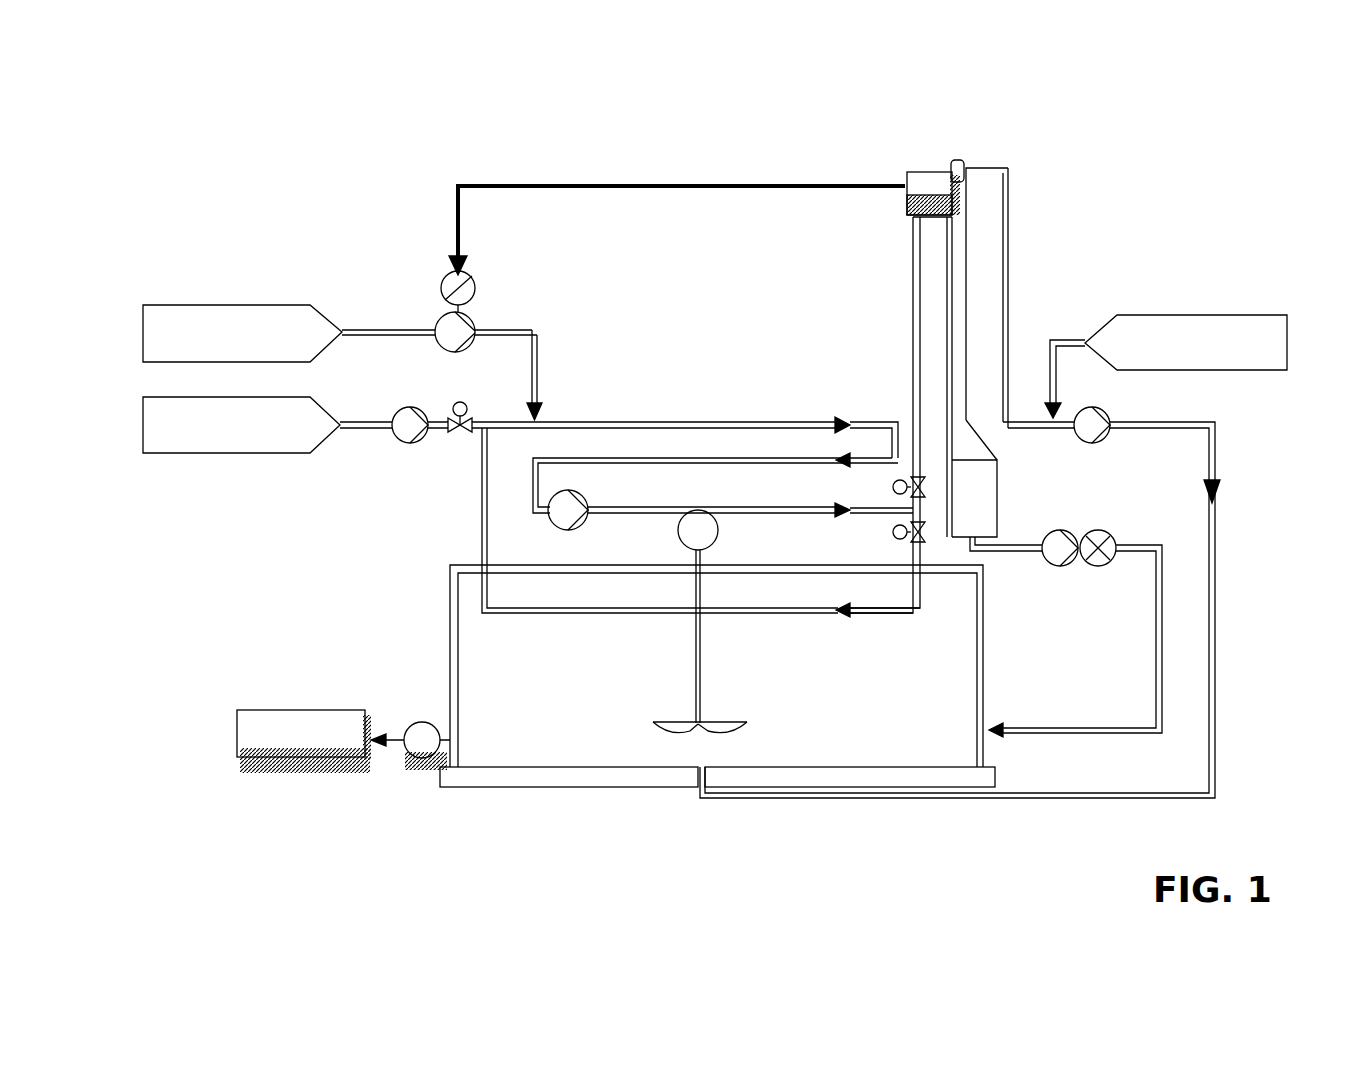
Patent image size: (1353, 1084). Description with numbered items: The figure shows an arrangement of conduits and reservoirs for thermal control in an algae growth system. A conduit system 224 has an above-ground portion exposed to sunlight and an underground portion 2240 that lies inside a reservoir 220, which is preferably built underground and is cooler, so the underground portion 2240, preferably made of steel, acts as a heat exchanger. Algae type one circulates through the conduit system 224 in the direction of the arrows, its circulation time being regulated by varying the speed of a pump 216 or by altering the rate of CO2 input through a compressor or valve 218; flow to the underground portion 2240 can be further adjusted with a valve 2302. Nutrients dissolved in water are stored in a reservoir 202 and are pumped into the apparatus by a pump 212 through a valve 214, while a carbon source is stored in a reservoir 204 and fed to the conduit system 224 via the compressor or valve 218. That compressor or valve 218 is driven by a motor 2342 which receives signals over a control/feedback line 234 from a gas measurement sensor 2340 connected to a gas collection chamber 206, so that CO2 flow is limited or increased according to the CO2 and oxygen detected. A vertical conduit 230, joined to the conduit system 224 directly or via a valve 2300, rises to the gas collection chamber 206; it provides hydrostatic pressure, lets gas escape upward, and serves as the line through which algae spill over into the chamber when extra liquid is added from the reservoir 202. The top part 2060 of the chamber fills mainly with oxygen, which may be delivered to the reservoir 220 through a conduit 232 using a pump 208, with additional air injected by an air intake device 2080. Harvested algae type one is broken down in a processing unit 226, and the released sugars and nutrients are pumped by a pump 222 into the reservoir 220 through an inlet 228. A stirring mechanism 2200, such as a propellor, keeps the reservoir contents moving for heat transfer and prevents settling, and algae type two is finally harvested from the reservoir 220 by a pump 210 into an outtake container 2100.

The nutrient reservoir 202 is at (249, 456).
The carbon source reservoir 204 is at (289, 285).
The gas collection chamber 206 is at (997, 135).
The top part of the collection chamber 2060 is at (1044, 302).
The pump 208 is at (1095, 454).
The air intake device 2080 is at (1166, 315).
The pump 210 is at (355, 784).
The outtake container 2100 is at (239, 760).
The pump 212 is at (355, 463).
The valve 214 is at (396, 470).
The pump 216 is at (598, 530).
The compressor or valve 218 is at (437, 309).
The reservoir 220 is at (602, 676).
The stirring means 2200 is at (638, 694).
The pump 222 is at (1162, 644).
The conduit system 224 is at (685, 436).
The underground portion of the conduit system 2240 is at (674, 730).
The processing unit 226 is at (1181, 603).
The inlet 228 is at (965, 717).
The vertical conduit 230 is at (850, 411).
The valve 2300 is at (840, 411).
The valve 2302 is at (877, 611).
The conduit 232 is at (960, 555).
The control/feedback line 234 is at (677, 193).
The gas measurement sensor 2340 is at (899, 164).
The motor 2342 is at (420, 219).